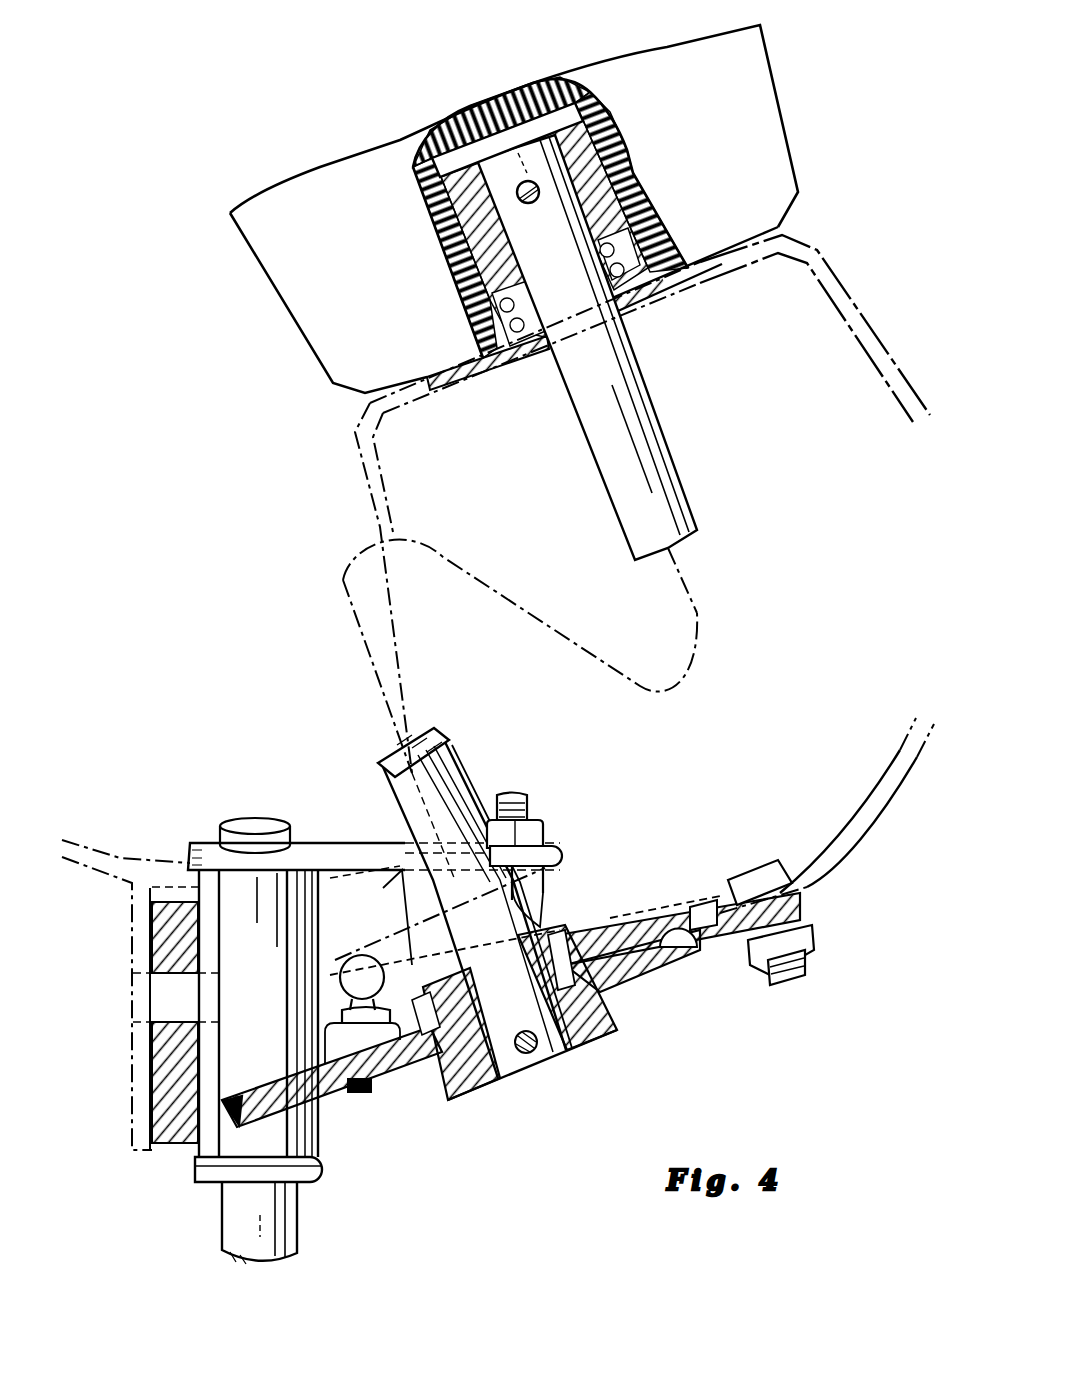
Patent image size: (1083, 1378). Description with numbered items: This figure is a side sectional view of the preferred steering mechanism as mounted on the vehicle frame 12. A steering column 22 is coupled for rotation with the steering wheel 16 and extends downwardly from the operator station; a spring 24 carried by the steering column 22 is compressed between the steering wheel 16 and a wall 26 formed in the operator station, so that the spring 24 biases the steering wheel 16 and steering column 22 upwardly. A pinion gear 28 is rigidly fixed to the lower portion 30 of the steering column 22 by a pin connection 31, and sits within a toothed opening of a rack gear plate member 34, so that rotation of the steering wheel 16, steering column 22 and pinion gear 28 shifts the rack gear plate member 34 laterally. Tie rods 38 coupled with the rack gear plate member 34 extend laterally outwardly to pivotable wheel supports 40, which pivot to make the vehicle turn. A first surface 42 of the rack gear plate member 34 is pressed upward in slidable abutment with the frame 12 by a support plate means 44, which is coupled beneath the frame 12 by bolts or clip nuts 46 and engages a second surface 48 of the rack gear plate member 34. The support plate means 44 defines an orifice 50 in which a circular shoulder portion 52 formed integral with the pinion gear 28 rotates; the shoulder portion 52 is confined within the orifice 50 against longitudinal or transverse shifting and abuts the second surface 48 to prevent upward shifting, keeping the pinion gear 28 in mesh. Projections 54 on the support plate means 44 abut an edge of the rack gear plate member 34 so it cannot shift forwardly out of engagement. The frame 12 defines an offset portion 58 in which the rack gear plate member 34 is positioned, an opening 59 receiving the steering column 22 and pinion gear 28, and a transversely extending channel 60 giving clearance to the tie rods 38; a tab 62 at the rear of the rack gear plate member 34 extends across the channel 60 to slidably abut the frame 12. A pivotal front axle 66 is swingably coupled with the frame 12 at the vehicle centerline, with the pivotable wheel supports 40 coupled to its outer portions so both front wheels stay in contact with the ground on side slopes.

The vehicle frame 12 is at (867, 800).
The steering wheel 16 is at (277, 293).
The steering column 22 is at (650, 405).
The spring 24 is at (530, 347).
The wall 26 is at (703, 253).
The pinion gear 28 is at (548, 937).
The lower portion 30 is at (548, 937).
The pin connection 31 is at (530, 1062).
The rack gear plate member 34 is at (640, 927).
The tie rods 38 is at (372, 955).
The pivotable wheel supports 40 is at (289, 812).
The first surface 42 is at (597, 940).
The support plate means 44 is at (678, 975).
The bolts or clip nuts 46 is at (797, 973).
The second surface 48 is at (620, 972).
The orifice 50 is at (588, 1040).
The shoulder portion 52 is at (447, 1097).
The projections 54 is at (688, 912).
The offset portion 58 is at (674, 905).
The opening 59 is at (550, 978).
The channel 60 is at (355, 893).
The tab 62 is at (345, 1085).
The pivotal front axle 66 is at (178, 1147).